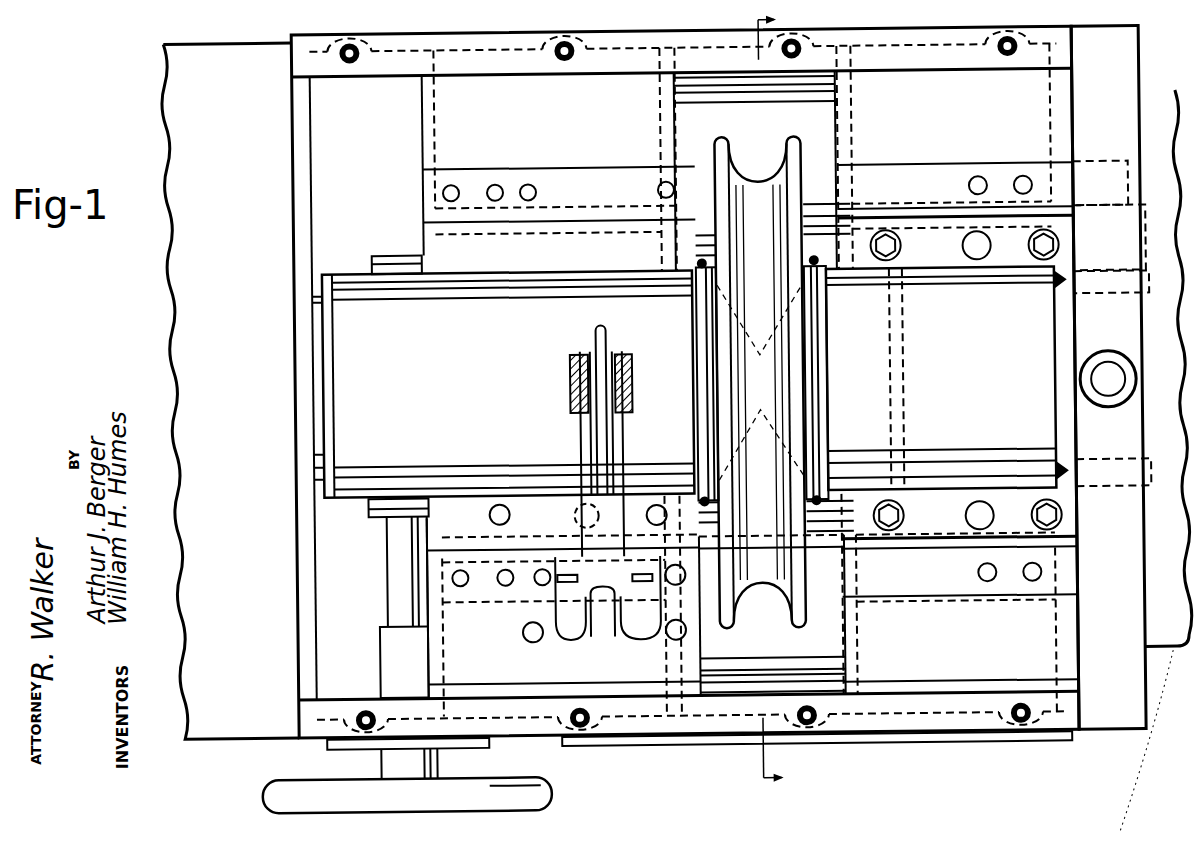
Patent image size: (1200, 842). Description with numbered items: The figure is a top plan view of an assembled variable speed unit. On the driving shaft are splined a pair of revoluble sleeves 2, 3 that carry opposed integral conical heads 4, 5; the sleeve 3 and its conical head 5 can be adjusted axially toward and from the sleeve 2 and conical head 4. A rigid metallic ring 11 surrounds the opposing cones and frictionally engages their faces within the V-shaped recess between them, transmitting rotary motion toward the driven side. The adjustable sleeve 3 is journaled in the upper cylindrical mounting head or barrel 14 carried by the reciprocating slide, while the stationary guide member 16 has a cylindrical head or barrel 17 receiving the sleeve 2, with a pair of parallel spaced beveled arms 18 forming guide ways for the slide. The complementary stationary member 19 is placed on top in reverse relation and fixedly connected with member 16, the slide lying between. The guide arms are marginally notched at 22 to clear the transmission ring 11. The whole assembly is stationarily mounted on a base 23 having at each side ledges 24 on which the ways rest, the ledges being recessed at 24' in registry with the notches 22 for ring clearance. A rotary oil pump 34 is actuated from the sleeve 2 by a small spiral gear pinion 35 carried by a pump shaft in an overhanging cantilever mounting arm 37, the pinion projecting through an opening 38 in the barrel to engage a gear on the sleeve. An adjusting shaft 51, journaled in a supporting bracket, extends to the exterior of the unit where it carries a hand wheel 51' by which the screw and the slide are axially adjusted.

The revoluble sleeve 2 is at (325, 392).
The revoluble sleeve 3 is at (779, 399).
The conical head 4 is at (700, 322).
The conical head 5 is at (812, 349).
The rigid metallic ring 11 is at (791, 147).
The cylindrical mounting head or barrel 14 is at (946, 378).
The guide member 16 is at (440, 506).
The cylindrical head or barrel 17 is at (503, 375).
The beveled arms 18 is at (1072, 252).
The complementary stationary member 19 is at (1001, 177).
The marginal notches 22 is at (825, 218).
The base 23 is at (667, 722).
The ledges 24 is at (750, 380).
The recesses 24' is at (760, 383).
The rotary oil pump 34 is at (558, 506).
The spiral gear pinion 35 is at (569, 361).
The overhanging cantilever mounting arm 37 is at (600, 331).
The opening 38 is at (633, 367).
The adjusting shaft 51 is at (385, 599).
The hand wheel 51' is at (394, 780).